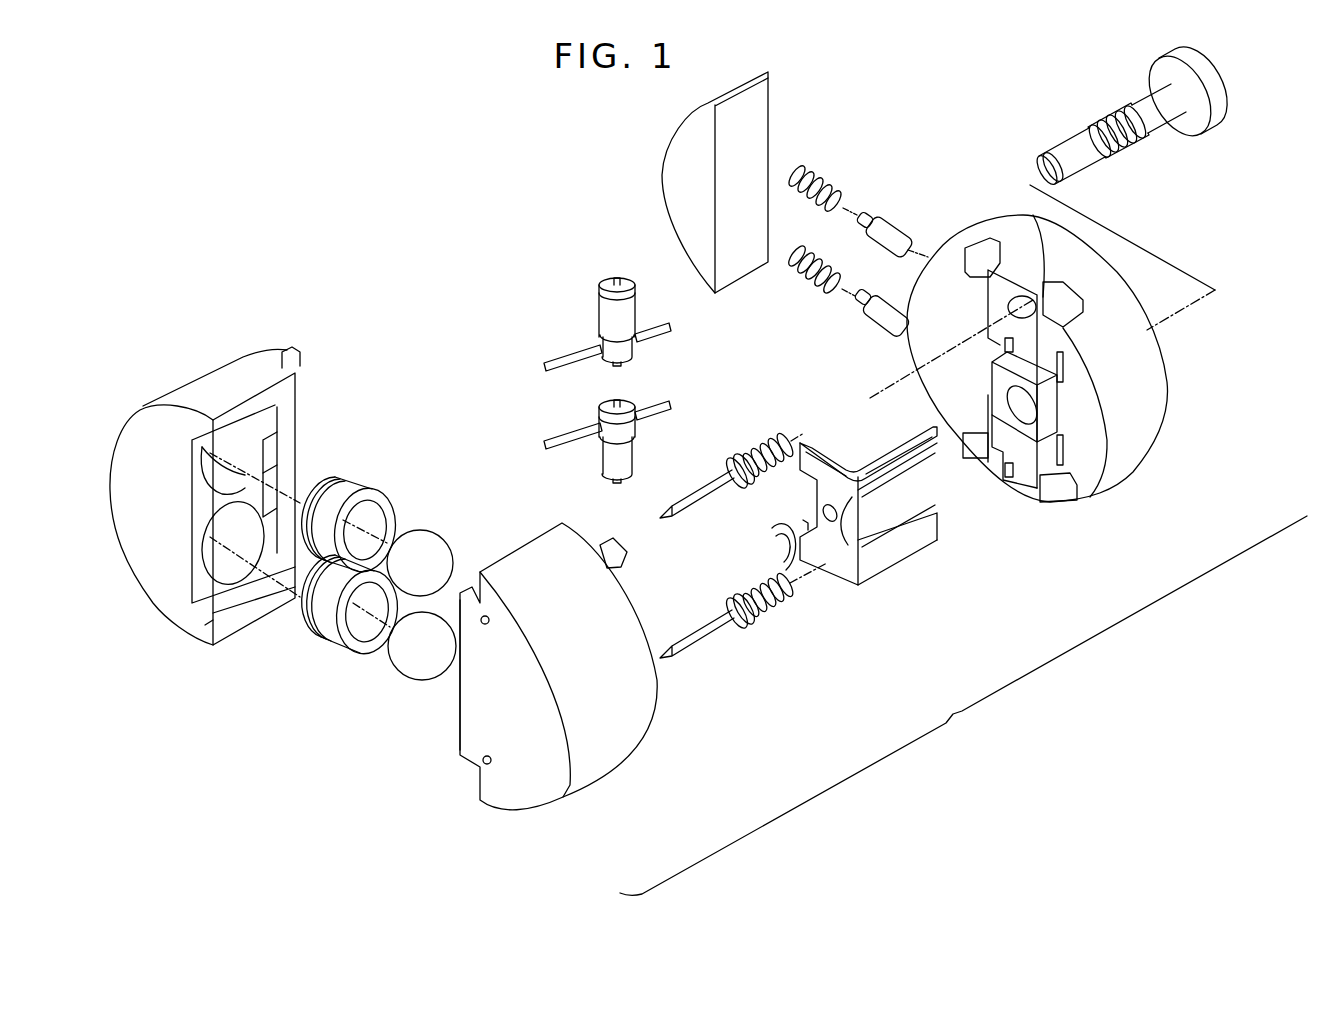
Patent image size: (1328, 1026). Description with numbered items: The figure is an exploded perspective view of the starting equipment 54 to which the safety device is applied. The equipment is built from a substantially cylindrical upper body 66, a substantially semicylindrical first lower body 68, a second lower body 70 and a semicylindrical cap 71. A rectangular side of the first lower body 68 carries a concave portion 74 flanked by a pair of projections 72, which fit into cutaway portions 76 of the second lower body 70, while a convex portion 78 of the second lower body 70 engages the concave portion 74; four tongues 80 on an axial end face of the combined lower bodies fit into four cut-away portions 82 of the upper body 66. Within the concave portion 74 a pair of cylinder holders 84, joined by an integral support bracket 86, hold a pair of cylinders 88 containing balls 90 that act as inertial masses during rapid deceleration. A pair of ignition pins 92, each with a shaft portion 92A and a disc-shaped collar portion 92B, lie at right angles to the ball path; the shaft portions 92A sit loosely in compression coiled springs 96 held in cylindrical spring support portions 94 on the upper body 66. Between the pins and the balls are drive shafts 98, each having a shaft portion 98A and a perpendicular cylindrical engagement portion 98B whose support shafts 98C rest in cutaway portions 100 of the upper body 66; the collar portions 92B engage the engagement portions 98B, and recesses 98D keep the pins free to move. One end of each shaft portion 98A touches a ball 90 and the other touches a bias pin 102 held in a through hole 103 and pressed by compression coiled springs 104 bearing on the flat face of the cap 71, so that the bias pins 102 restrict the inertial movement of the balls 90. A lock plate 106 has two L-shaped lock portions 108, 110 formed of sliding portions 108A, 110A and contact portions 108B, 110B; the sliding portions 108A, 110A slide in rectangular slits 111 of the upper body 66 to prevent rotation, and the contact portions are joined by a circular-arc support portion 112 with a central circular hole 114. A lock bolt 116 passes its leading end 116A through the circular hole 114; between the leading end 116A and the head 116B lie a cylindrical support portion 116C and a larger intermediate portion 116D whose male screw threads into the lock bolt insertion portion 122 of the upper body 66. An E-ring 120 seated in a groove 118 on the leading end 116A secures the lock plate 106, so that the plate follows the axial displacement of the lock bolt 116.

The starting equipment 54 is at (955, 717).
The upper body 66 is at (1165, 387).
The first lower body 68 is at (188, 380).
The second lower body 70 is at (660, 702).
The cap 71 is at (775, 74).
The projections 72 is at (306, 389).
The concave portion 74 is at (200, 597).
The cutaway portions 76 is at (476, 574).
The convex portion 78 is at (460, 737).
The tongues 80 is at (296, 350).
The cut-away portions 82 is at (975, 243).
The cylinder holders 84 is at (285, 436).
The support bracket 86 is at (305, 458).
The cylinders 88 is at (375, 488).
The balls 90 is at (430, 531).
The ignition pins 92 is at (741, 534).
The shaft portion 92A is at (712, 490).
The collar portion 92B is at (748, 462).
The spring support portions 94 is at (1027, 268).
The compression coiled springs 96 is at (788, 447).
The drive shafts 98 is at (595, 357).
The shaft portion 98A is at (555, 360).
The engagement portion 98B is at (605, 283).
The support shafts 98C is at (617, 277).
The recesses 98D is at (636, 312).
The cutaway portions 100 is at (997, 279).
The bias pins 102 is at (892, 226).
The through holes 103 is at (1008, 309).
The compression coiled springs 104 is at (815, 181).
The lock plate 106 is at (925, 557).
The lock portion 108 is at (868, 491).
The sliding portion 108A is at (878, 462).
The contact portion 108B is at (838, 461).
The lock portion 110 is at (890, 556).
The sliding portion 110A is at (843, 637).
The contact portion 110B is at (848, 586).
The slits 111 is at (1066, 373).
The support portion 112 is at (858, 510).
The circular hole 114 is at (821, 512).
The lock bolt 116 is at (1169, 131).
The leading end 116A is at (1060, 183).
The head 116B is at (1228, 96).
The support portion 116C is at (1115, 152).
The intermediate portion 116D is at (1183, 125).
The groove 118 is at (1052, 158).
The E-ring 120 is at (768, 541).
The lock bolt insertion portion 122 is at (1118, 457).